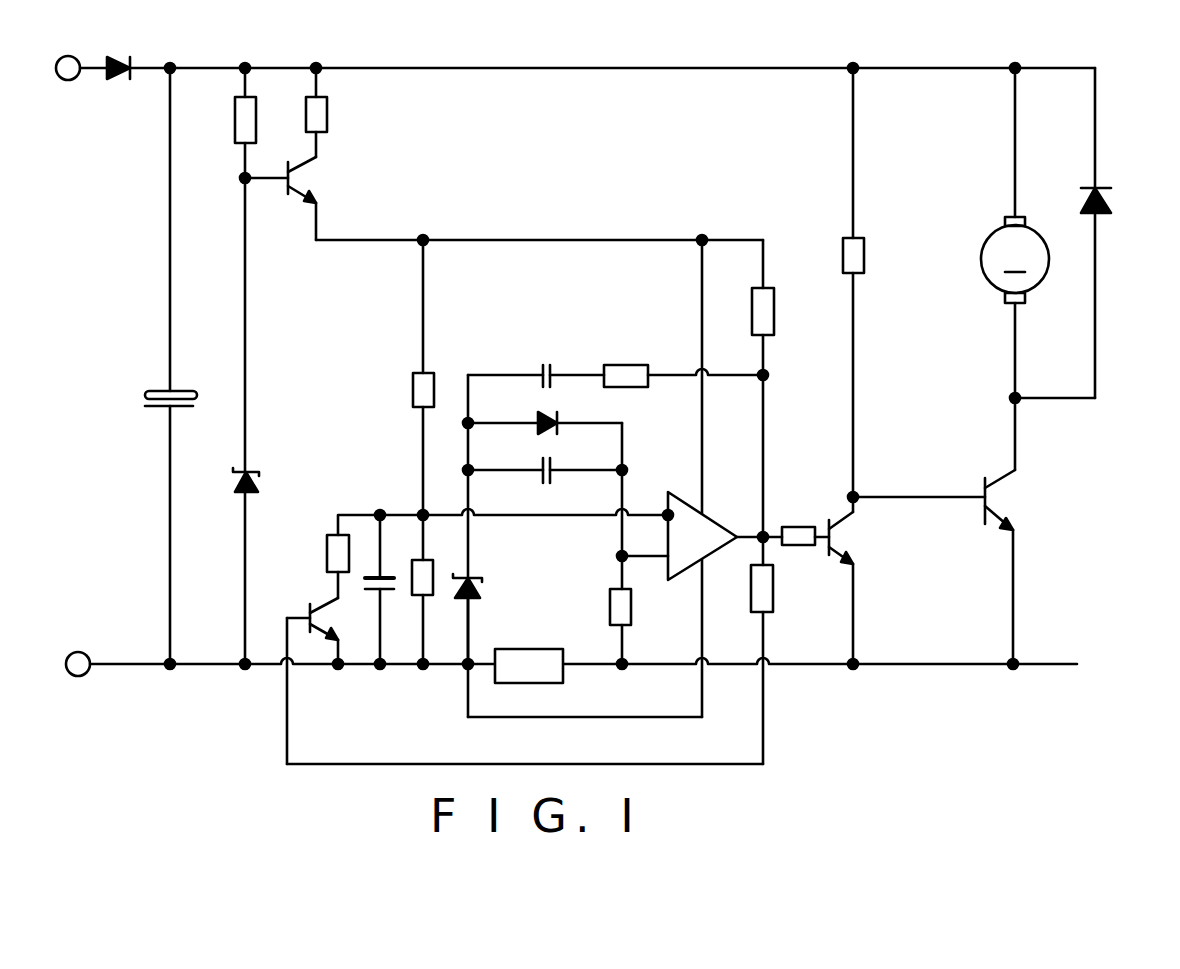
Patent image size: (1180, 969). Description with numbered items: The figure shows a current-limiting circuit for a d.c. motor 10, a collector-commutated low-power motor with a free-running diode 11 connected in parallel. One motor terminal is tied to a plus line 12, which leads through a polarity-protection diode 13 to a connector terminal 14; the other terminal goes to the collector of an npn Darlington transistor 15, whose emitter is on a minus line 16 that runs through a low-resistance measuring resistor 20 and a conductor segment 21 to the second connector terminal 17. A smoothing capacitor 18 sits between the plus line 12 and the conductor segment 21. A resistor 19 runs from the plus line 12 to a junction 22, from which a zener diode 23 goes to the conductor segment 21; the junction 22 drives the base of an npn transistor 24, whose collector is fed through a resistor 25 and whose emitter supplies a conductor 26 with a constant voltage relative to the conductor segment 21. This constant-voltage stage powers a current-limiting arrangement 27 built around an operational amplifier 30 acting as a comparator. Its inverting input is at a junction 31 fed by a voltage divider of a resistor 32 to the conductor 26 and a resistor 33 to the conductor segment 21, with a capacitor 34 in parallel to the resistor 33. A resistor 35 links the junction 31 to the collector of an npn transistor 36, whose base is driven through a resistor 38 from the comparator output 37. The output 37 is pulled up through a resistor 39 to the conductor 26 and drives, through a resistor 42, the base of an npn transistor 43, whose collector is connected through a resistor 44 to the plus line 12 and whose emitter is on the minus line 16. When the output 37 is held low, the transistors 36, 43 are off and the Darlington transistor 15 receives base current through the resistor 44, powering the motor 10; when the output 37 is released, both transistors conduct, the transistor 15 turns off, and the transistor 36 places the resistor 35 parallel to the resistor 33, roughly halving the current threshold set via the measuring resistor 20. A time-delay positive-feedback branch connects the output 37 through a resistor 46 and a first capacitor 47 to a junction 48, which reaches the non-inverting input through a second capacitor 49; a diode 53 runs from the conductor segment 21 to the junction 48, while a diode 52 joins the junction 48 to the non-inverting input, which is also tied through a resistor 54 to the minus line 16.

The d.c. motor 10 is at (990, 235).
The free-running diode 11 is at (1111, 205).
The plus line 12 is at (585, 68).
The diode 13 is at (128, 56).
The connector terminal 14 is at (72, 79).
The npn Darlington transistor 15 is at (985, 480).
The minus line 16 is at (880, 668).
The connector terminal 17 is at (80, 676).
The smoothing capacitor 18 is at (145, 395).
The resistor 19 is at (237, 118).
The measuring resistor 20 is at (563, 680).
The conductor segment 21 is at (338, 670).
The junction 22 is at (240, 185).
The zener diode 23 is at (240, 485).
The npn transistor 24 is at (290, 195).
The resistor 25 is at (328, 112).
The conductor 26 is at (455, 240).
The current-limiting arrangement 27 is at (530, 585).
The operational amplifier 30 is at (695, 525).
The junction 31 is at (413, 513).
The resistor 32 is at (413, 388).
The resistor 33 is at (430, 572).
The capacitor 34 is at (390, 592).
The resistor 35 is at (330, 553).
The npn transistor 36 is at (312, 612).
The output 37 is at (766, 530).
The resistor 38 is at (775, 590).
The resistor 39 is at (775, 305).
The resistor 42 is at (805, 527).
The npn transistor 43 is at (840, 545).
The resistor 44 is at (866, 255).
The resistor 46 is at (628, 375).
The first capacitor 47 is at (540, 372).
The junction 48 is at (472, 420).
The second capacitor 49 is at (538, 478).
The diode 52 is at (560, 415).
The diode 53 is at (480, 594).
The resistor 54 is at (631, 608).